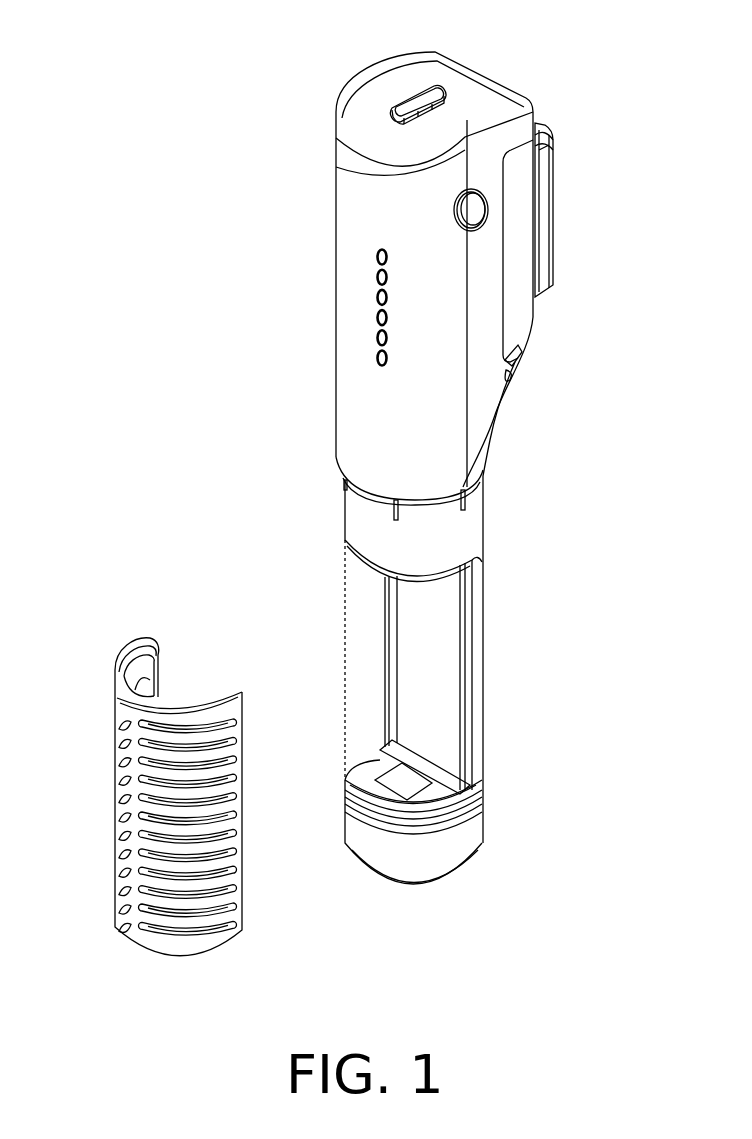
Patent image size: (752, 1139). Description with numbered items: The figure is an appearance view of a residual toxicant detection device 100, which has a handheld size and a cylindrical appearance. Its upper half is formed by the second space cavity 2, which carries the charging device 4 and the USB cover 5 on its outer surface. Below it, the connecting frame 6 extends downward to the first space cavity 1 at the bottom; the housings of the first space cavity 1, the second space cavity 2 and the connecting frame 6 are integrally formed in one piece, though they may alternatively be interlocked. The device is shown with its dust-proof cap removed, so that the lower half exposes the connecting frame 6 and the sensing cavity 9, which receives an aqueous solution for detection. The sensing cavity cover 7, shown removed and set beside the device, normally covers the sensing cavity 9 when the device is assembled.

The residual toxicant detection device 100 is at (135, 53).
The first space cavity 1 is at (477, 828).
The second space cavity 2 is at (353, 383).
The charging device 4 is at (545, 210).
The USB cover 5 is at (415, 103).
The connecting frame 6 is at (482, 677).
The sensing cavity cover 7 is at (120, 698).
The sensing cavity 9 is at (378, 657).